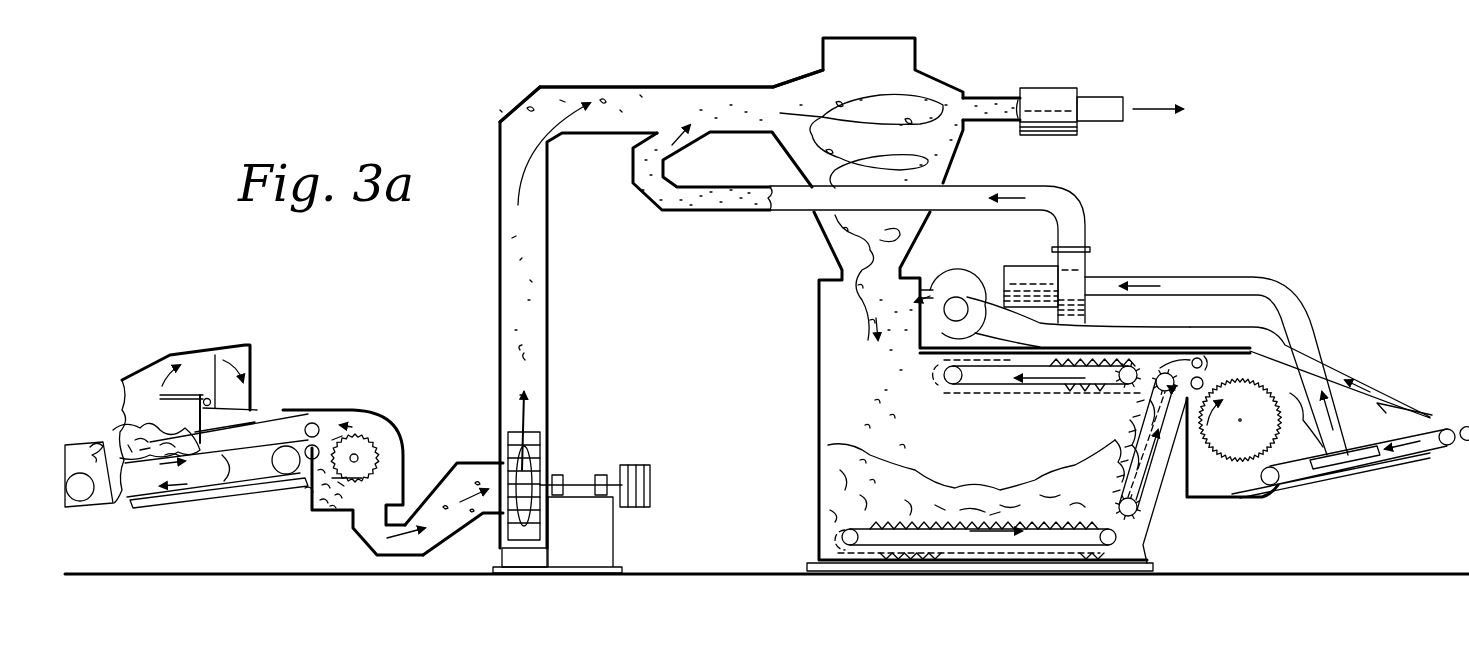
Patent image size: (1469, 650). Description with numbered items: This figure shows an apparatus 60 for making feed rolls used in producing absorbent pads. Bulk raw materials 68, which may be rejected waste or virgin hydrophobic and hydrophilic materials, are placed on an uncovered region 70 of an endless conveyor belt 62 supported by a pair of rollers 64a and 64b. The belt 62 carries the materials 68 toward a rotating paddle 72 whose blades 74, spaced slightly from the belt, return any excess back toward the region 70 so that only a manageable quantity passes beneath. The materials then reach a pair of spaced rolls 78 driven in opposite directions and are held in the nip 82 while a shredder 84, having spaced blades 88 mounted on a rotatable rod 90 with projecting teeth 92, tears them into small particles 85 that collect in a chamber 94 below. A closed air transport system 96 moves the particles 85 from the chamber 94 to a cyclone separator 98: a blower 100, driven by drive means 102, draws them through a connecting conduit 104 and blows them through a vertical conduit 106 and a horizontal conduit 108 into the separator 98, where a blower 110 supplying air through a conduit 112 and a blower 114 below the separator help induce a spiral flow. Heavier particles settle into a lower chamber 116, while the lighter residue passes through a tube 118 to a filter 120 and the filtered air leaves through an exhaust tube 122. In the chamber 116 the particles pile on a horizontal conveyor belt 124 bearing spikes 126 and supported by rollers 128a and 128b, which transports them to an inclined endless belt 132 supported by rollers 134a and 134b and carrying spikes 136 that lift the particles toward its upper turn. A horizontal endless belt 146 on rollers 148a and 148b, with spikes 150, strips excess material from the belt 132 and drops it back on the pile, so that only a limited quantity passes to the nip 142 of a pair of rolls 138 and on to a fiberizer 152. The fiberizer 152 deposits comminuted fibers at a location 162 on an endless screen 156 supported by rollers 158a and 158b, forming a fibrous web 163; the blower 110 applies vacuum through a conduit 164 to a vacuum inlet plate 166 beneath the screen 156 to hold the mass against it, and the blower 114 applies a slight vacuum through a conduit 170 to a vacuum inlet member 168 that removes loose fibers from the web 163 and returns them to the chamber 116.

The apparatus 60 is at (556, 82).
The endless conveyor belt 62 is at (223, 478).
The roller 64a is at (82, 500).
The roller 64b is at (286, 475).
The bulk raw materials 68 is at (112, 425).
The uncovered region 70 is at (88, 445).
The paddle 72 is at (222, 375).
The blades 74 is at (199, 420).
The spaced rolls 78 is at (318, 446).
The nip 82 is at (308, 423).
The shredder 84 is at (372, 457).
The particles 85 is at (522, 350).
The blades 88 is at (375, 470).
The rotatable rod 90 is at (356, 455).
The teeth 92 is at (378, 481).
The chamber 94 is at (336, 515).
The closed air transport system 96 is at (500, 135).
The cyclone separator 98 is at (923, 71).
The blower 100 is at (545, 460).
The drive means 102 is at (633, 464).
The connecting conduit 104 is at (468, 460).
The vertical conduit 106 is at (549, 290).
The horizontal conduit 108 is at (624, 87).
The blower 110 is at (1088, 263).
The conduit 112 is at (1040, 186).
The blower 114 is at (950, 290).
The lower chamber 116 is at (822, 362).
The tube 118 is at (990, 95).
The filter 120 is at (1052, 87).
The exhaust tube 122 is at (1108, 96).
The conveyor belt 124 is at (965, 520).
The spikes 126 is at (912, 515).
The roller 128a is at (843, 532).
The roller 128b is at (1118, 540).
The endless belt 132 is at (1168, 492).
The roller 134a is at (1145, 520).
The roller 134b is at (1166, 378).
The spikes 136 is at (1112, 447).
The rolls 138 is at (1200, 380).
The nip 142 is at (1205, 355).
The endless belt 146 is at (989, 386).
The roller 148a is at (949, 384).
The roller 148b is at (1118, 384).
The spikes 150 is at (1034, 386).
The fiberizer 152 is at (1235, 475).
The endless screen 156 is at (1432, 462).
The roller 158a is at (1283, 483).
The roller 158b is at (1452, 447).
The location 162 is at (1312, 437).
The fibrous web 163 is at (1428, 425).
The conduit 164 is at (1205, 276).
The vacuum inlet plate 166 is at (1360, 466).
The vacuum inlet member 168 is at (1410, 400).
The conduit 170 is at (1342, 362).